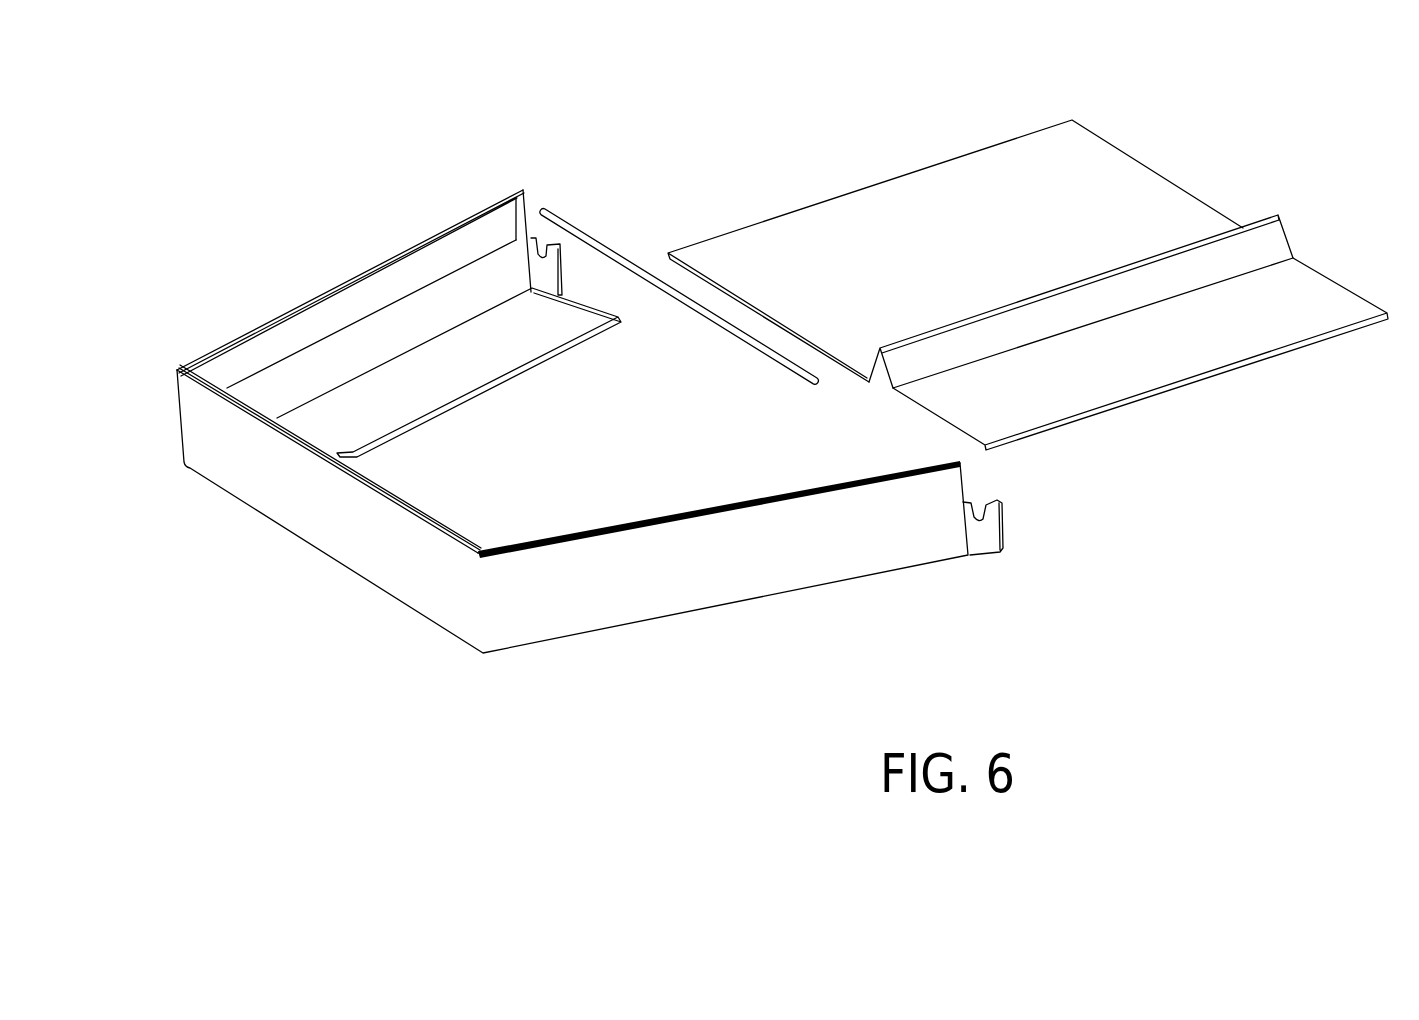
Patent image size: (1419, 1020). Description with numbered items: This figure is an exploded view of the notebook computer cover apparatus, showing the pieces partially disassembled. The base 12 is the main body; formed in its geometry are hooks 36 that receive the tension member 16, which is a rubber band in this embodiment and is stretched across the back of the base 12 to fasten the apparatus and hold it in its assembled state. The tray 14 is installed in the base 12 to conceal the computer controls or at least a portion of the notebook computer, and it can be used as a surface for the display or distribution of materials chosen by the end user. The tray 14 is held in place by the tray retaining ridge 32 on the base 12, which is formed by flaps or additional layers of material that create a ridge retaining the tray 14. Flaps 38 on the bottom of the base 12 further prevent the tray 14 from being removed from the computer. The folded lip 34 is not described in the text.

The base 12 is at (438, 232).
The tray 14 is at (1102, 155).
The tension member 16 is at (552, 207).
The tray retaining ridge 32 is at (237, 358).
The cover lip channel 34 is at (1279, 233).
The hooks 36 is at (987, 520).
The flaps 38 is at (503, 385).